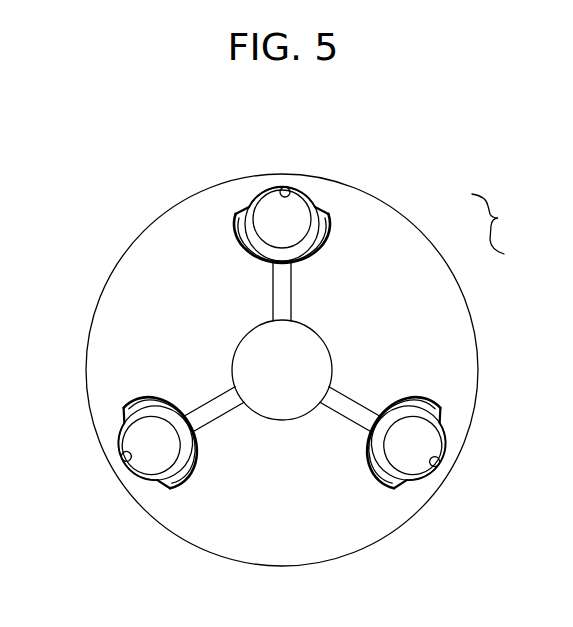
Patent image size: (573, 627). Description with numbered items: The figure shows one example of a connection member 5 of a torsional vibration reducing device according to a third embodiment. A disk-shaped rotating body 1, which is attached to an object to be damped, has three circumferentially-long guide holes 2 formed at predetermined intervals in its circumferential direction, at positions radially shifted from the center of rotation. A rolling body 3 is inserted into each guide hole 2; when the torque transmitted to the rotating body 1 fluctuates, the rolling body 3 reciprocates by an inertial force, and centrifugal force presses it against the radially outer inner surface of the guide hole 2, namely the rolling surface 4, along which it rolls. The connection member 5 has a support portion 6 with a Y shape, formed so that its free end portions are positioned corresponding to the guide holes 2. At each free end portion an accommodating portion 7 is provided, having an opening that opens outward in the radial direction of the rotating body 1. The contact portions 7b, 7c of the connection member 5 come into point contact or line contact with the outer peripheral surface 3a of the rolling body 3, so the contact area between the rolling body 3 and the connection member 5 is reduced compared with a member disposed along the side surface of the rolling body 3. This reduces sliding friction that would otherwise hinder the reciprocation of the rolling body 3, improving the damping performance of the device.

The rotating body 1 is at (406, 213).
The guide hole 2 is at (314, 203).
The rolling body 3 is at (270, 208).
The outer peripheral surface 3a is at (302, 198).
The rolling surface 4 is at (288, 188).
The connection member 5 is at (494, 224).
The support portion 6 is at (292, 290).
The accommodating portion 7 is at (245, 224).
The contact portion 7b is at (313, 216).
The contact portion 7c is at (242, 211).